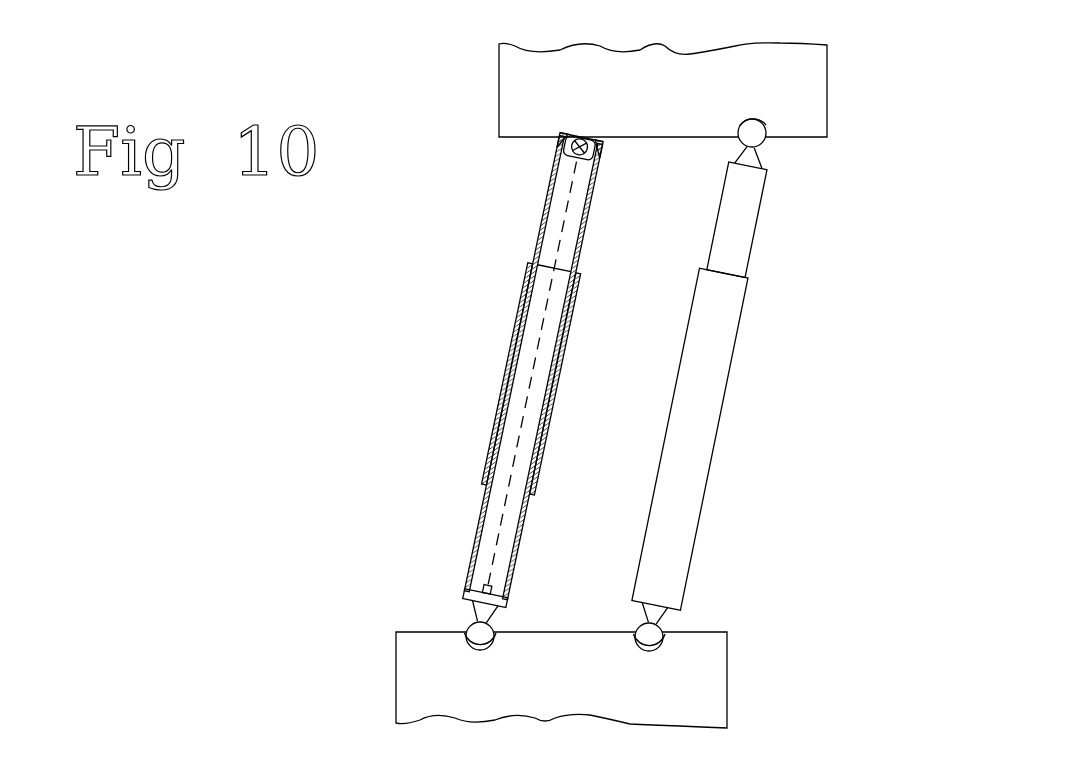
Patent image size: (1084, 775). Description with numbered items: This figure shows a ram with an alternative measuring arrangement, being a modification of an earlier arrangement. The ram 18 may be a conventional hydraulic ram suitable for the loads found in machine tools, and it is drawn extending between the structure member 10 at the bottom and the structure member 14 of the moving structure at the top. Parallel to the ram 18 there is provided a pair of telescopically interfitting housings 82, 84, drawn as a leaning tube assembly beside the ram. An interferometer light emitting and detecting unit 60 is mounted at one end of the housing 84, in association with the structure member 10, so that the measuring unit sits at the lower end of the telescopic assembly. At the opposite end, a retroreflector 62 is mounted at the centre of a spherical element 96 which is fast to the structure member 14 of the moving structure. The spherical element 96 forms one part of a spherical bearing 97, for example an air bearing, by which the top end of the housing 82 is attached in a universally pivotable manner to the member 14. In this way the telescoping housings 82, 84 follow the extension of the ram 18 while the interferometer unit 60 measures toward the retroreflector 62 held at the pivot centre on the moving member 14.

The structure member 10 is at (727, 675).
The structure member of the moving structure 14 is at (827, 93).
The ram 18 is at (740, 345).
The interferometer light emitting and detecting unit 60 is at (485, 596).
The retroreflector 62 is at (596, 143).
The housing 82 is at (523, 297).
The housing 84 is at (478, 523).
The spherical element 96 is at (597, 162).
The spherical bearing 97 is at (560, 143).